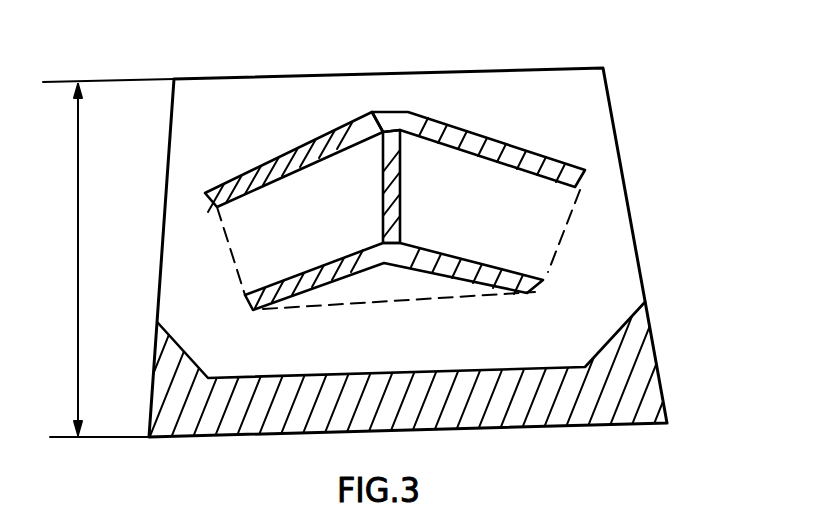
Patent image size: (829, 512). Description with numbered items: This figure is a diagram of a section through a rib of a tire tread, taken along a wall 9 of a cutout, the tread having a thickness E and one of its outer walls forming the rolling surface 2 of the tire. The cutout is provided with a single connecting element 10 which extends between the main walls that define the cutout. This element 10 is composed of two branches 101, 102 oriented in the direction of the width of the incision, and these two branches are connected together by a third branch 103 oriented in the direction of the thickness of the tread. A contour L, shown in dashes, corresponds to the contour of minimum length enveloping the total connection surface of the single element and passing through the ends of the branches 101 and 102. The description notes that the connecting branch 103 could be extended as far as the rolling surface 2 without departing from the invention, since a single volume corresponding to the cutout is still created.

The rolling surface 2 is at (462, 71).
The wall of a cutout 9 is at (435, 349).
The single connecting element 10 is at (280, 157).
The first branch 101 is at (537, 157).
The second branch 102 is at (537, 273).
The third branch 103 is at (387, 215).
The contour of minimum length L is at (560, 240).
The thickness E is at (108, 258).